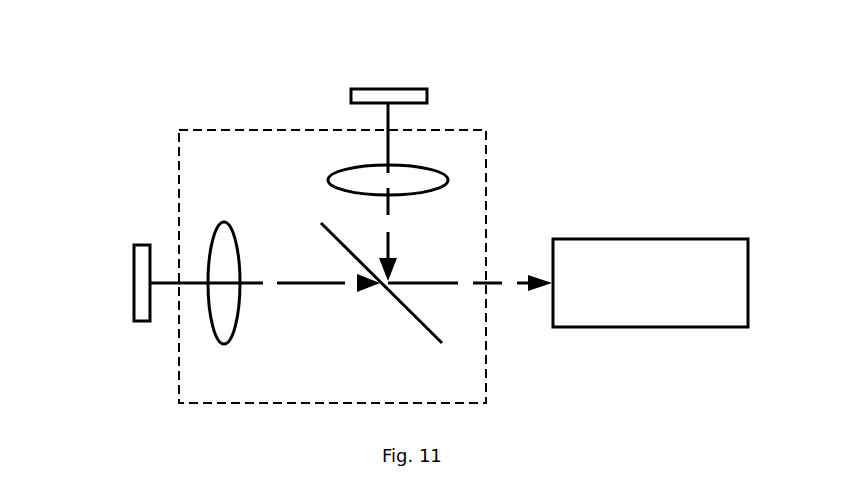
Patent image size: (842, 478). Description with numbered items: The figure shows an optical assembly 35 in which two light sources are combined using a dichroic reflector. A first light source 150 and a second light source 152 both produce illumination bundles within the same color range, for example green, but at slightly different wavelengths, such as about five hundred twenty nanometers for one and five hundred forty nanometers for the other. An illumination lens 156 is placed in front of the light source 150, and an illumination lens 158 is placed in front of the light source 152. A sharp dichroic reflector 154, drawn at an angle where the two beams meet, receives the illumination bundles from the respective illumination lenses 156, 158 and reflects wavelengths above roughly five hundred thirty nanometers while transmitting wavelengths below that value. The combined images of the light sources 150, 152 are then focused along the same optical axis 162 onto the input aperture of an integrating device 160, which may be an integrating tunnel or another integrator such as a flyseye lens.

The optical assembly 35 is at (257, 130).
The light source 150 is at (138, 303).
The light source 152 is at (373, 95).
The sharp dichroic reflector 154 is at (410, 318).
The illumination lens 156 is at (216, 227).
The illumination lens 158 is at (448, 178).
The integrating device 160 is at (663, 327).
The optical axis 162 is at (517, 292).